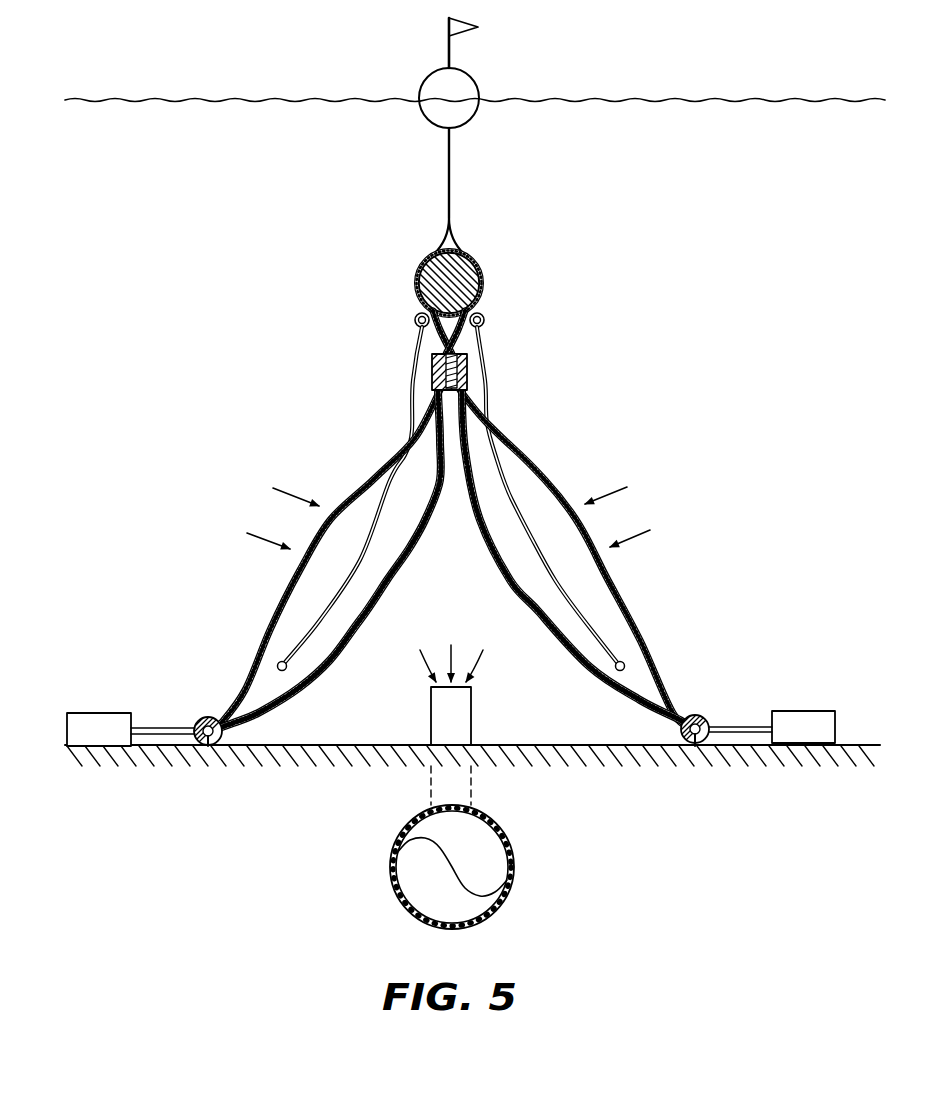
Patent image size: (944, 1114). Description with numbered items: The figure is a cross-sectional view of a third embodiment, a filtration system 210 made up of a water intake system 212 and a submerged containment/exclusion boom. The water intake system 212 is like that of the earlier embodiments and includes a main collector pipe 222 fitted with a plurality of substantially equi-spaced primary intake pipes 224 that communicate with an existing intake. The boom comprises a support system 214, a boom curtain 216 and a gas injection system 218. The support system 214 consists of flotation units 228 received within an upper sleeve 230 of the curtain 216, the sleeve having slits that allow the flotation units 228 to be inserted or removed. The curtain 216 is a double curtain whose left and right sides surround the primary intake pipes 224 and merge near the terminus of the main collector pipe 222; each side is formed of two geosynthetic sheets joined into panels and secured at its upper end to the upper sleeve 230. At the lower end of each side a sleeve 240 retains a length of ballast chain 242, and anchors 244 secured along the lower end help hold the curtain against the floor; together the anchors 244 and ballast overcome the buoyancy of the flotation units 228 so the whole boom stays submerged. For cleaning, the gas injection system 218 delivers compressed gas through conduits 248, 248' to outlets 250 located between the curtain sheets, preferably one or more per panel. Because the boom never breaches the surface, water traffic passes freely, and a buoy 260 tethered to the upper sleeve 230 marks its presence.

The filtration system 210 is at (211, 232).
The water intake system 212 is at (341, 871).
The support system 214 is at (506, 262).
The boom curtain 216 is at (560, 460).
The gas injection system 218 is at (507, 343).
The main collector pipe 222 is at (514, 868).
The primary intake pipes 224 is at (436, 702).
The flotation units 228 is at (428, 278).
The upper sleeve 230 is at (424, 334).
The sleeve 240 is at (207, 717).
The ballast chain 242 is at (208, 747).
The anchors 244 is at (122, 712).
The conduit 248 is at (377, 304).
The conduit 248' is at (526, 304).
The outlets 250 is at (278, 663).
The buoy 260 is at (434, 82).